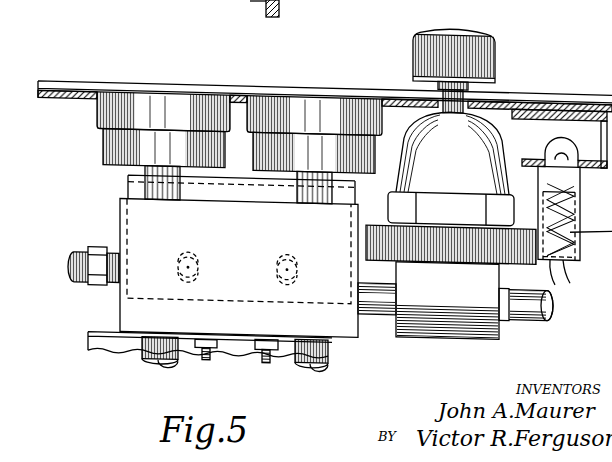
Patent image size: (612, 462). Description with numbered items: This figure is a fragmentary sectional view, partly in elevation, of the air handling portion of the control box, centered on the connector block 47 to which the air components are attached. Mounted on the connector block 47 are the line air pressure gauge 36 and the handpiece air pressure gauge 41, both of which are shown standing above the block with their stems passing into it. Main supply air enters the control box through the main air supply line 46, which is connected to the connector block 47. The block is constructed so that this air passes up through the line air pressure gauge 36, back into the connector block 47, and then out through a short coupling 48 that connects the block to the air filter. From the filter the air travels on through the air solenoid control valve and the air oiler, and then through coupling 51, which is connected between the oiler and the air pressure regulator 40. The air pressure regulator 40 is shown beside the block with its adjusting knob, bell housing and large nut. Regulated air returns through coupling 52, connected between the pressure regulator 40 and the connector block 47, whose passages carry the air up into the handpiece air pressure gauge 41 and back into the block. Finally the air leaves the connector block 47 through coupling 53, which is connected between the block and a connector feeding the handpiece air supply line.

The line air pressure gauge 36 is at (112, 138).
The handpiece air pressure gauge 41 is at (310, 105).
The air pressure regulator 40 is at (476, 133).
The connector block 47 is at (150, 220).
The short coupling 48 is at (67, 260).
The main air supply line 46 is at (150, 358).
The coupling 53 is at (308, 356).
The coupling 52 is at (383, 292).
The coupling 51 is at (527, 293).